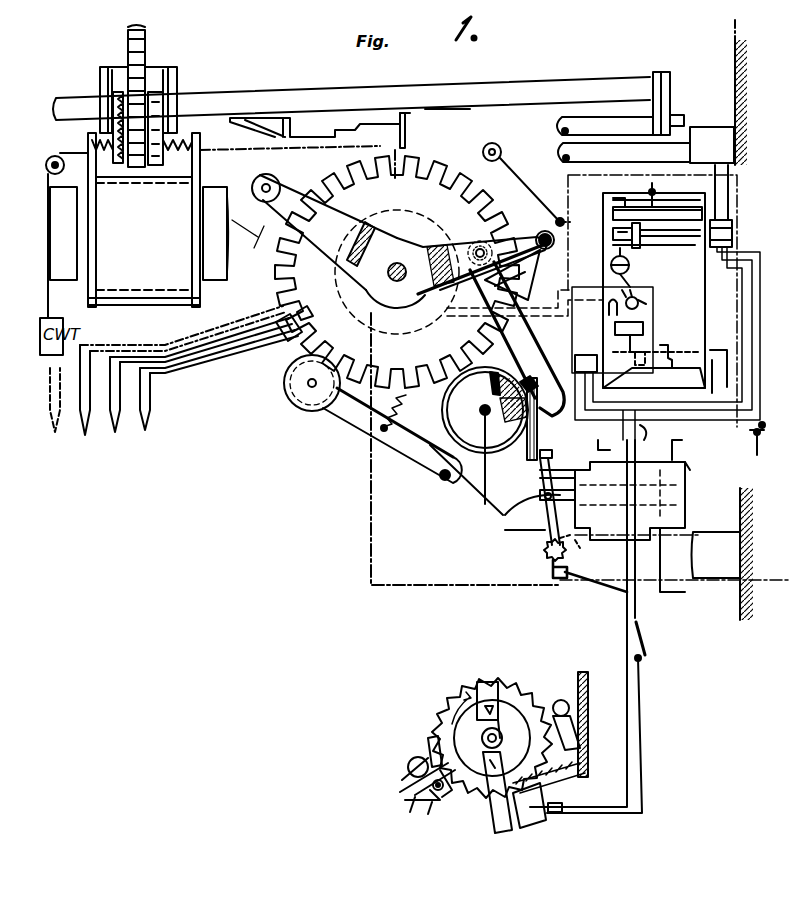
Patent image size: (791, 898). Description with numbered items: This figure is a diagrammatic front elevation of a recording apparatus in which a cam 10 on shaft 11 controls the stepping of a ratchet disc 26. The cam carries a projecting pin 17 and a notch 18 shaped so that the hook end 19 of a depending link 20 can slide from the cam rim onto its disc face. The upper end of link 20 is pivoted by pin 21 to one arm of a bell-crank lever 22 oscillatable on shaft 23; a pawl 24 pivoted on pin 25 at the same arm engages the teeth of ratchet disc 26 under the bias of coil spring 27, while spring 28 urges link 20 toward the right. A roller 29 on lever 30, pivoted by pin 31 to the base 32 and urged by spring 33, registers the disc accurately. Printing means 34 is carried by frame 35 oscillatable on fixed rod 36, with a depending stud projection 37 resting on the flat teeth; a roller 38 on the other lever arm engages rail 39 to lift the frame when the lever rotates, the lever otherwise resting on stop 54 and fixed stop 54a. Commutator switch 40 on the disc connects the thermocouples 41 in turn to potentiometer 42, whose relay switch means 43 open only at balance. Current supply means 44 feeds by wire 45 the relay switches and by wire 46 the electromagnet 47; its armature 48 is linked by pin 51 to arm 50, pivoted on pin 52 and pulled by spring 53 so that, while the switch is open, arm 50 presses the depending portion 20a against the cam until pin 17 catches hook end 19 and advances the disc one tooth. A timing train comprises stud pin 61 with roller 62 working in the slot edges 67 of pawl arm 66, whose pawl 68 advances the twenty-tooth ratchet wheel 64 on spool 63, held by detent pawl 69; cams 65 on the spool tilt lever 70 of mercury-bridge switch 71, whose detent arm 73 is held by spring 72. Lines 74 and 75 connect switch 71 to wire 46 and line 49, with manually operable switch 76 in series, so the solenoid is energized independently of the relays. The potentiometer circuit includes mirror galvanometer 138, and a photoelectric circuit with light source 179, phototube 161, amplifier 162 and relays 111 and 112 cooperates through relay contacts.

The cam 10 is at (500, 457).
The shaft 11 is at (481, 415).
The pin 17 is at (540, 426).
The notch 18 is at (538, 392).
The hook end 19 is at (508, 413).
The link 20 is at (528, 366).
The depending portion 20a is at (566, 489).
The pin 21 is at (498, 246).
The bell-crank lever 22 is at (472, 271).
The shaft 23 is at (402, 284).
The pawl 24 is at (536, 262).
The pin 25 is at (552, 239).
The ratchet disc 26 is at (480, 198).
The coil spring 27 is at (546, 218).
The spring 28 is at (474, 240).
The roller 29 is at (284, 390).
The lever 30 is at (392, 446).
The pin 31 is at (440, 486).
The base 32 is at (360, 540).
The spring 33 is at (412, 412).
The printing means 34 is at (182, 92).
The frame 35 is at (376, 97).
The fixed rod 36 is at (674, 118).
The stud projection 37 is at (408, 138).
The roller 38 is at (262, 176).
The rail 39 is at (300, 140).
The commutator switch 40 is at (397, 272).
The thermocouples 41 is at (90, 440).
The potentiometer 42 is at (572, 340).
The relay switch means 43 is at (582, 355).
The current supply means 44 is at (755, 448).
The wire 45 is at (650, 440).
The wire 46 is at (680, 446).
The electromagnet 47 is at (688, 466).
The armature 48 is at (675, 527).
The line 49 is at (602, 437).
The arm 50 is at (548, 520).
The pin 51 is at (512, 520).
The pin 52 is at (545, 556).
The spring 53 is at (573, 548).
The stop 54 is at (532, 480).
The fixed stop 54a is at (272, 234).
The stud pin 61 is at (446, 800).
The roller 62 is at (434, 812).
The spool 63 is at (515, 706).
The ratchet wheel 64 is at (460, 698).
The cams 65 is at (478, 682).
The pawl arm 66 is at (411, 783).
The slot edges 67 is at (412, 810).
The pawl 68 is at (428, 742).
The detent pawl 69 is at (580, 732).
The lever 70 is at (496, 830).
The mercury-bridge switch 71 is at (537, 828).
The spring 72 is at (582, 766).
The detent arm 73 is at (555, 784).
The line 74 is at (640, 608).
The line 75 is at (627, 612).
The manually operable switch 76 is at (648, 640).
The relay 111 is at (650, 340).
The relay 112 is at (670, 352).
The mirror galvanometer 138 is at (634, 268).
The phototube 161 is at (642, 306).
The amplifier 162 is at (648, 320).
The light source 179 is at (597, 305).